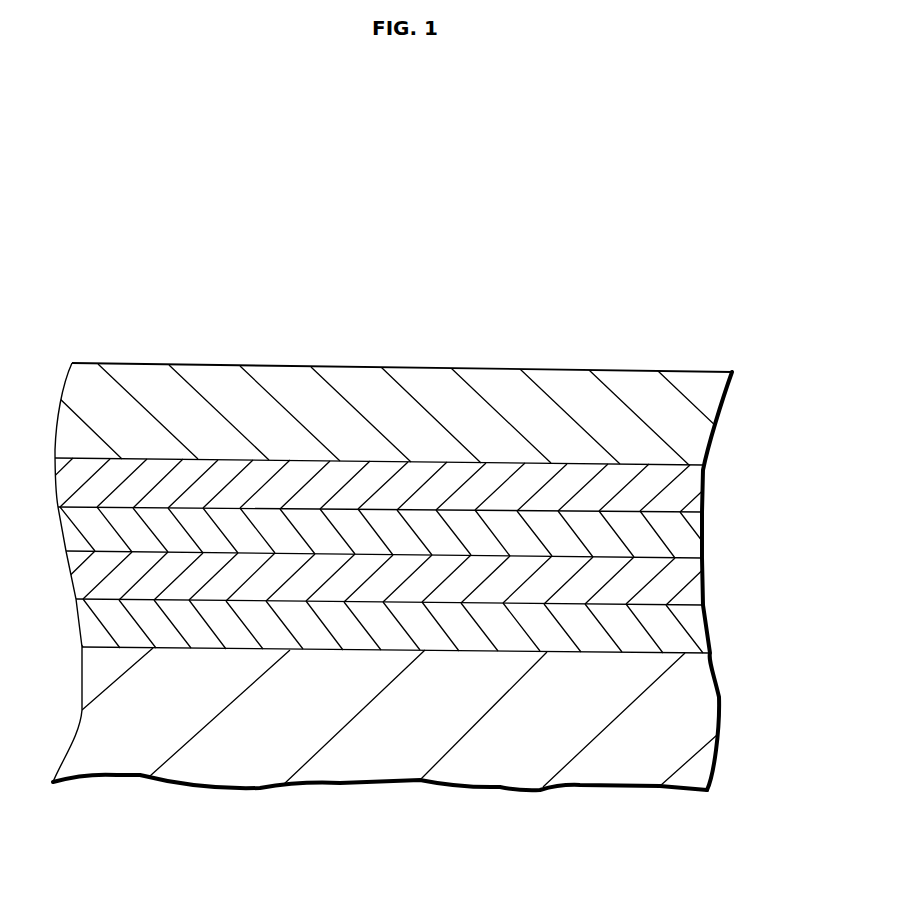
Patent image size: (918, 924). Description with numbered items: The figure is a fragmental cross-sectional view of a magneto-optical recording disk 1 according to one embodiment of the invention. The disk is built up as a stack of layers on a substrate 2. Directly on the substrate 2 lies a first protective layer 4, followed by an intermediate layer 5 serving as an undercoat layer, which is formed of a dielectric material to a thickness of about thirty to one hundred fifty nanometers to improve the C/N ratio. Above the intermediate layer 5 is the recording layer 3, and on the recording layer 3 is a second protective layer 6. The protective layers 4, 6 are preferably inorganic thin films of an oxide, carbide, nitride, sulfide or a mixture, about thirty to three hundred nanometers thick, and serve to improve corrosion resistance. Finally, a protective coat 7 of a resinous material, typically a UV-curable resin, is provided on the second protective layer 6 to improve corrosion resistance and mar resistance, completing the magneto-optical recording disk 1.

The magneto-optical recording disk 1 is at (362, 237).
The substrate 2 is at (698, 777).
The recording layer 3 is at (692, 540).
The protective layer 4 is at (693, 642).
The intermediate layer 5 is at (695, 595).
The protective layer 6 is at (692, 490).
The protective coat 7 is at (702, 437).